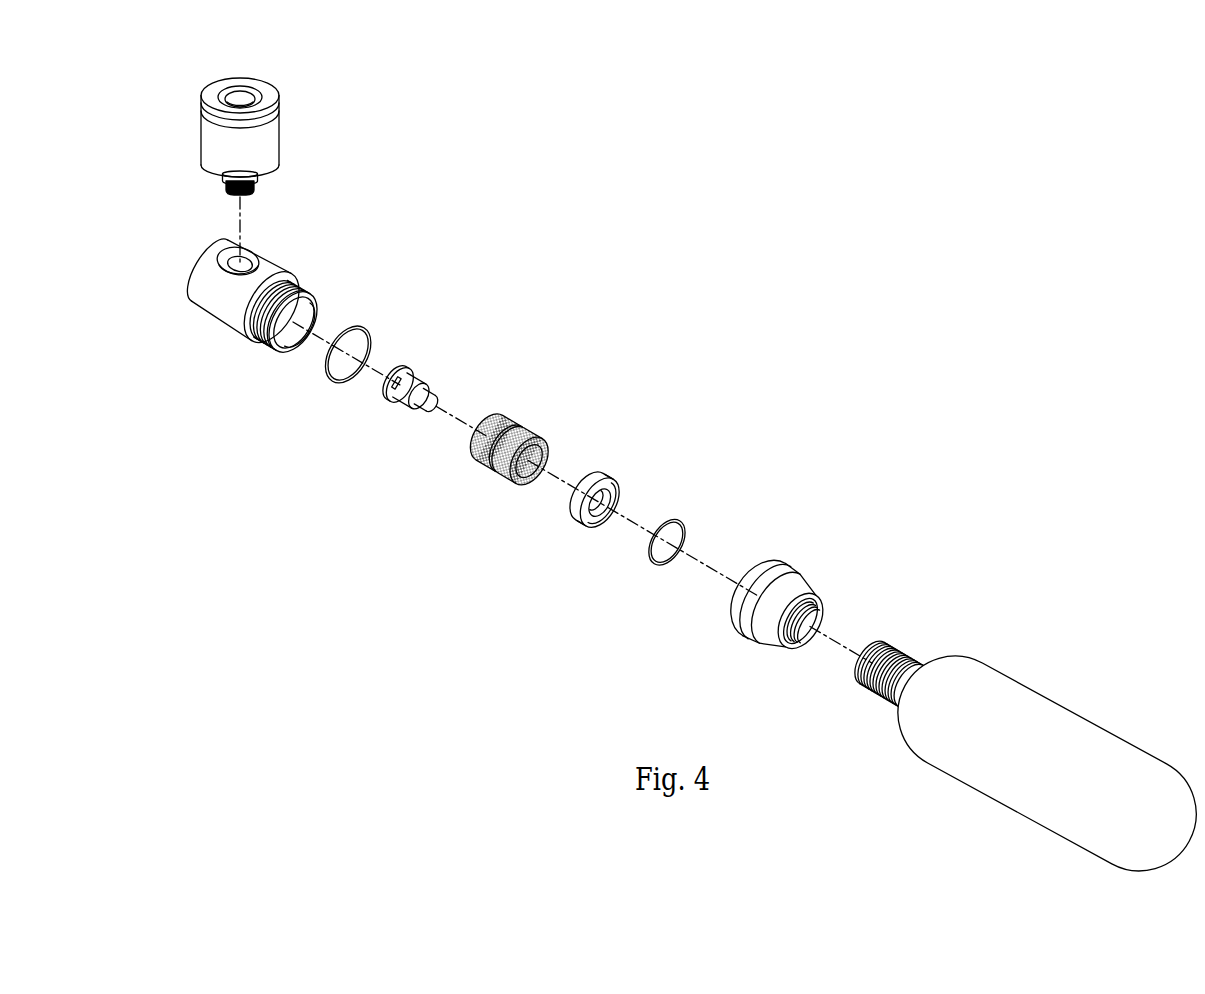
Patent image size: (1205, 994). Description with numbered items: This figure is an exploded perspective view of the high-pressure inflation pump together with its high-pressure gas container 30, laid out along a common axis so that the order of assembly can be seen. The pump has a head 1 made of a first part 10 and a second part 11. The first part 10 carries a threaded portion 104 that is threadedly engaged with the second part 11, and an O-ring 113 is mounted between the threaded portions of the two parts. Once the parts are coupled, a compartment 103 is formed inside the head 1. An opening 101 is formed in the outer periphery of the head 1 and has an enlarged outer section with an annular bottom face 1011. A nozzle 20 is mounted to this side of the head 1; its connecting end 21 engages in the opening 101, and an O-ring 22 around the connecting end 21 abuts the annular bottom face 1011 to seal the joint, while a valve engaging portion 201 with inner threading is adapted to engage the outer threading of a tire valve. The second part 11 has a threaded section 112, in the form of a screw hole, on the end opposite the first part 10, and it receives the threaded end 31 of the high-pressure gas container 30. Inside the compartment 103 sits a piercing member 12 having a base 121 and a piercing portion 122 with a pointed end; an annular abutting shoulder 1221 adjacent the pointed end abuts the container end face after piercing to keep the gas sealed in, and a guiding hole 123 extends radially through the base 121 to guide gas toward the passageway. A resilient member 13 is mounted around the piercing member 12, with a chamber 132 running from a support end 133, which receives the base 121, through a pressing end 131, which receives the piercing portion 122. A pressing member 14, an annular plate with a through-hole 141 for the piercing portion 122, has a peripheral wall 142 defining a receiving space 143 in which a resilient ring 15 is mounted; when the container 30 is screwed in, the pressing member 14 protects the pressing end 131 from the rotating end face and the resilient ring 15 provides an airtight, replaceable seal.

The head 1 is at (167, 308).
The first part 10 is at (223, 308).
The opening 101 is at (255, 259).
The annular bottom face 1011 is at (219, 249).
The compartment 103 is at (290, 338).
The threaded portion 104 is at (297, 284).
The O-ring 113 is at (336, 386).
The piercing member 12 is at (434, 386).
The base 121 is at (407, 372).
The piercing portion 122 is at (432, 408).
The annular abutting shoulder 1221 is at (437, 397).
The guiding hole 123 is at (390, 402).
The resilient member 13 is at (522, 439).
The pressing end 131 is at (503, 467).
The chamber 132 is at (540, 452).
The support end 133 is at (486, 466).
The pressing member 14 is at (600, 510).
The through-hole 141 is at (615, 498).
The peripheral wall 142 is at (576, 507).
The receiving space 143 is at (604, 522).
The resilient ring 15 is at (677, 520).
The second part 11 is at (801, 581).
The threaded section 112 is at (820, 617).
The nozzle 20 is at (201, 141).
The valve engaging portion 201 is at (248, 92).
The connecting end 21 is at (256, 188).
The O-ring 22 is at (226, 180).
The high-pressure gas container 30 is at (1026, 734).
The threaded end 31 is at (900, 647).